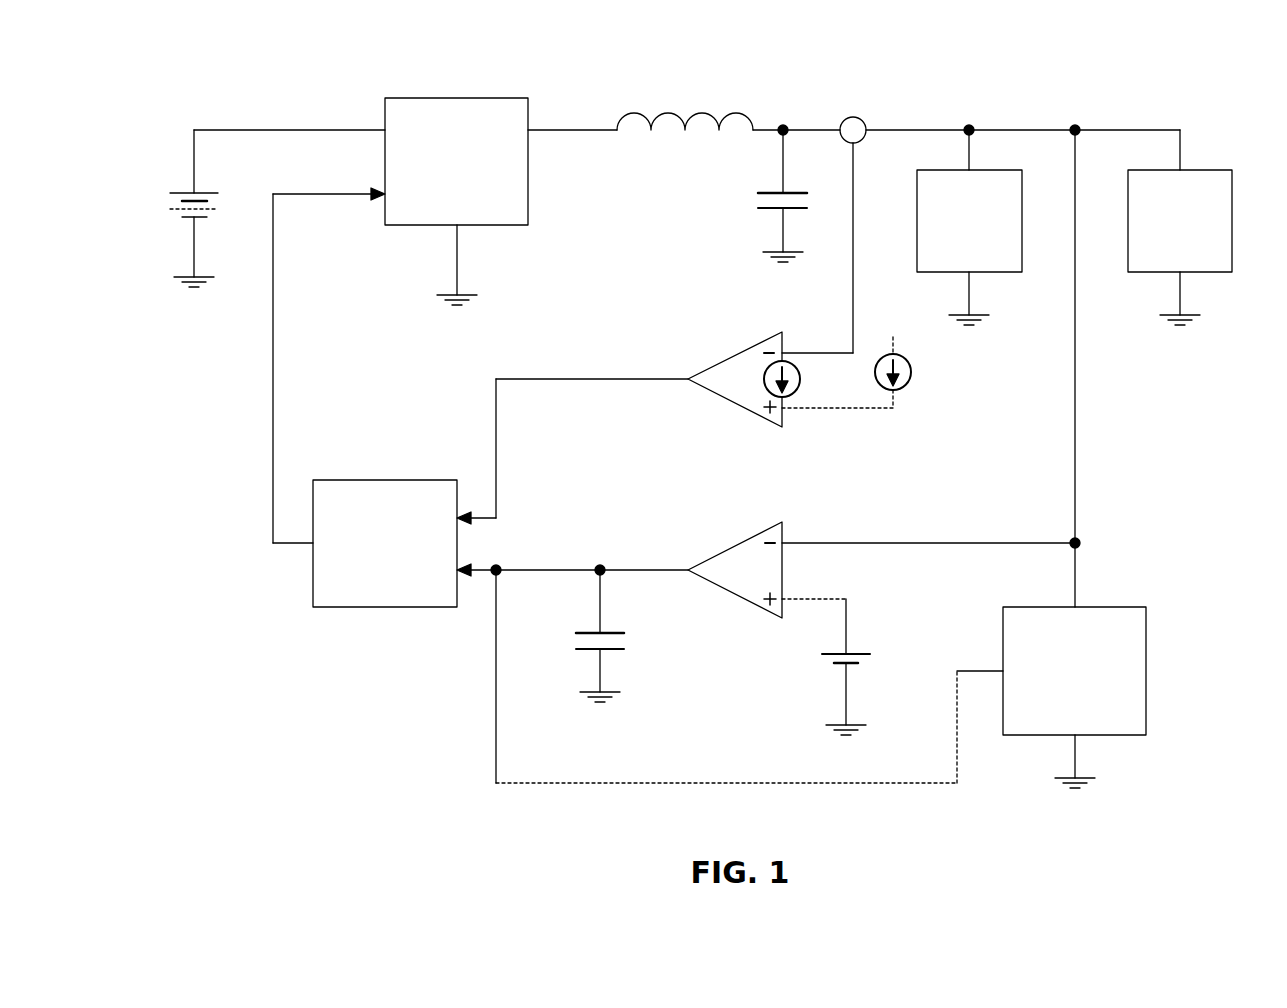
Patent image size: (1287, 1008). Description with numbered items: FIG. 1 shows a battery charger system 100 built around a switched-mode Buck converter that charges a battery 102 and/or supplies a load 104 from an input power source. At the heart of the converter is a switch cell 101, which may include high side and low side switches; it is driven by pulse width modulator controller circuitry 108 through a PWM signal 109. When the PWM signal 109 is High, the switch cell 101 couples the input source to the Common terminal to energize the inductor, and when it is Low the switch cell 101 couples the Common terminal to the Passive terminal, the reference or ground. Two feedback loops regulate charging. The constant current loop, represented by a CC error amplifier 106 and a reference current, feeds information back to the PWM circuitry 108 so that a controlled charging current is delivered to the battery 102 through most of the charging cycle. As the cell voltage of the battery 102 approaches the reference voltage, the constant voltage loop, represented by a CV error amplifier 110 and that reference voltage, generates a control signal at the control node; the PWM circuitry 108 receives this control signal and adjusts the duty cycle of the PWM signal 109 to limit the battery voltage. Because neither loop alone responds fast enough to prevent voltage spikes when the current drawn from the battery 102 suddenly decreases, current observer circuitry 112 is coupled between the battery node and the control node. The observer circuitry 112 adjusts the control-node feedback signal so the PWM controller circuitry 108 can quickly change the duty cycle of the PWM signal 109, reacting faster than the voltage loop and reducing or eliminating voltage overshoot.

The battery charger system 100 is at (157, 71).
The switch cell 101 is at (528, 170).
The battery 102 is at (1022, 225).
The load 104 is at (1200, 170).
The CC error amplifier 106 is at (733, 353).
The pulse width modulator controller circuitry 108 is at (390, 480).
The PWM signal 109 is at (275, 400).
The CV error amplifier 110 is at (760, 533).
The current observer circuitry 112 is at (1146, 666).